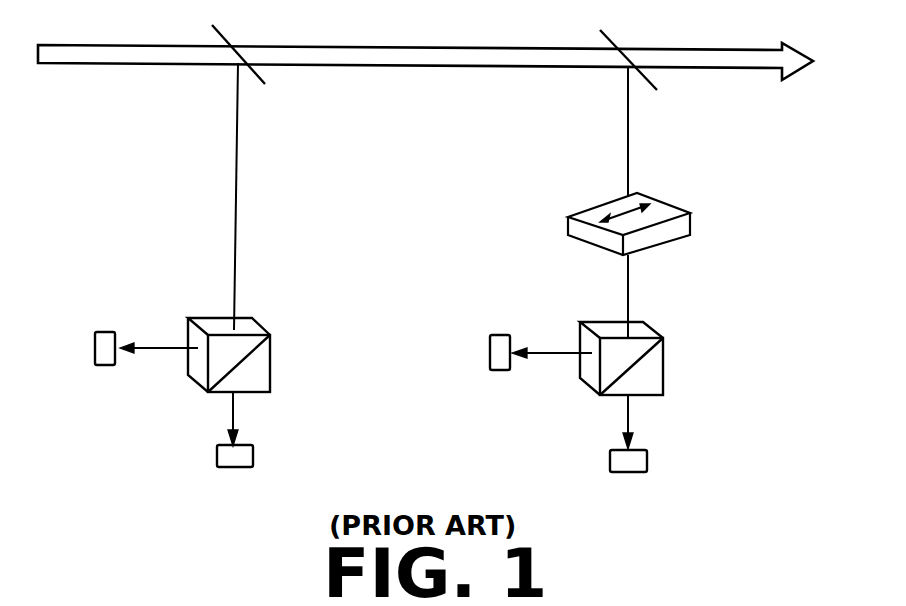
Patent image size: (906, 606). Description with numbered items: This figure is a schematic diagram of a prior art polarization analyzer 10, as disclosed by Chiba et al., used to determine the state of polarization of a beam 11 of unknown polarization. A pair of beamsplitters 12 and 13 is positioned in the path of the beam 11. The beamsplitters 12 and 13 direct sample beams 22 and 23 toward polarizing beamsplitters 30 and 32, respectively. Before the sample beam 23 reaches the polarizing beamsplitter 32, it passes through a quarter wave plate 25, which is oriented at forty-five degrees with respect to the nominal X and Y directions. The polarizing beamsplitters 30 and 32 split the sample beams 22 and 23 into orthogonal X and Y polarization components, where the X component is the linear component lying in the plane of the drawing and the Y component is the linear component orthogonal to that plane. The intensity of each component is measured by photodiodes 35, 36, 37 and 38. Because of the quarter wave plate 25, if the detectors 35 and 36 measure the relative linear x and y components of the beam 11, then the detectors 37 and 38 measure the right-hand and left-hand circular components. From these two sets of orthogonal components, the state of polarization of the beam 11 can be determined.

The polarization analyzer 10 is at (738, 418).
The beam 11 is at (132, 55).
The beamsplitter 12 is at (227, 37).
The beamsplitter 13 is at (610, 38).
The sample beam 22 is at (237, 195).
The sample beam 23 is at (627, 100).
The quarter wave plate 25 is at (680, 207).
The polarizing beamsplitter 30 is at (273, 352).
The polarizing beamsplitter 32 is at (667, 370).
The photodiode 35 is at (95, 338).
The photodiode 36 is at (217, 450).
The photodiode 37 is at (490, 342).
The photodiode 38 is at (610, 456).